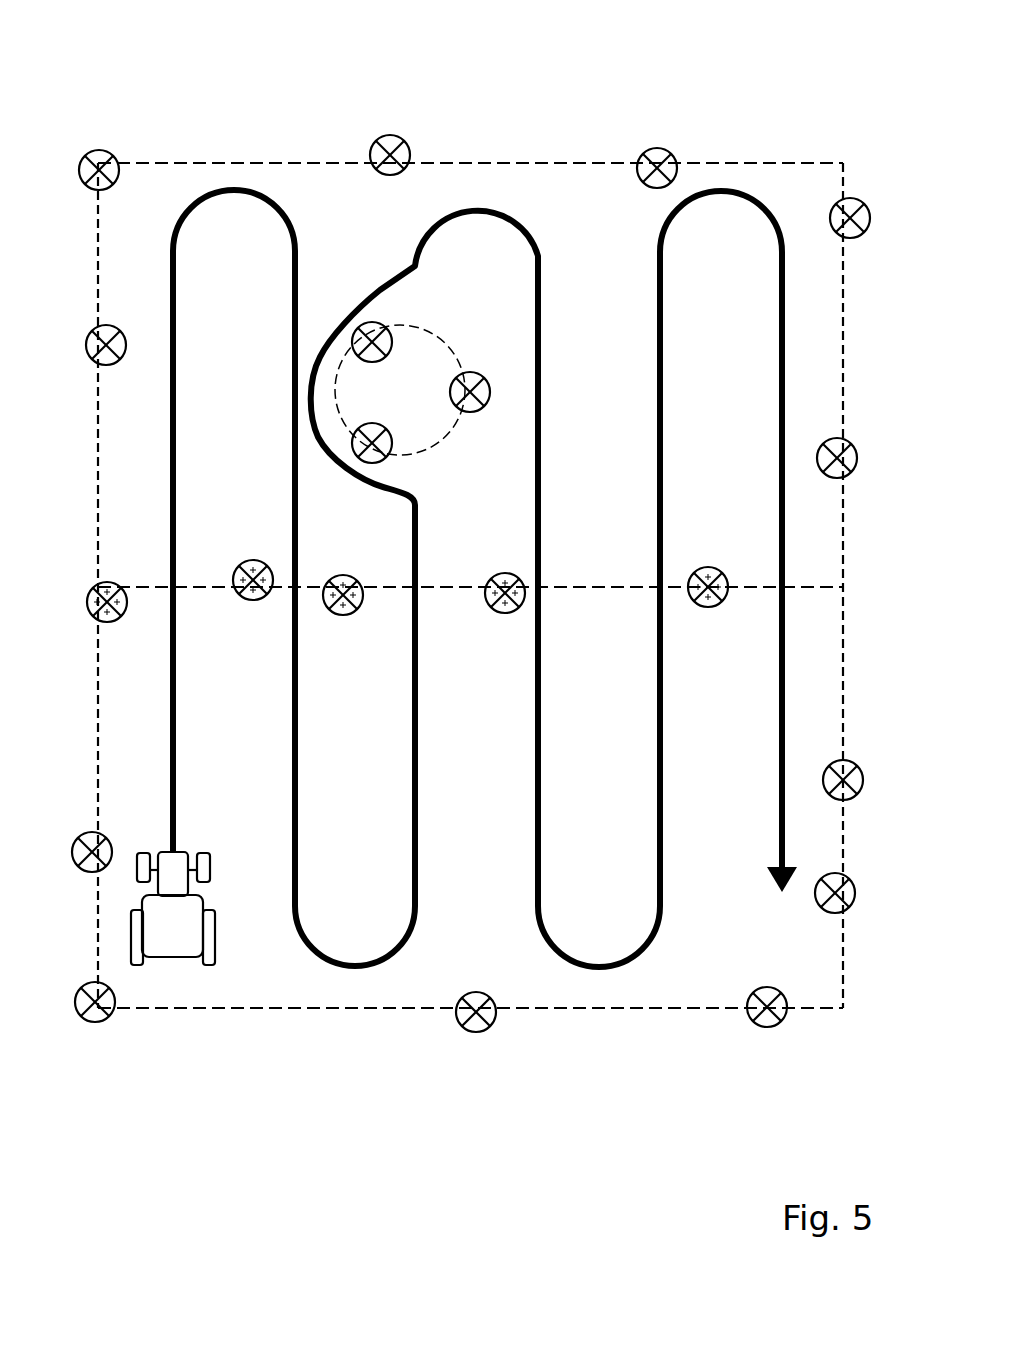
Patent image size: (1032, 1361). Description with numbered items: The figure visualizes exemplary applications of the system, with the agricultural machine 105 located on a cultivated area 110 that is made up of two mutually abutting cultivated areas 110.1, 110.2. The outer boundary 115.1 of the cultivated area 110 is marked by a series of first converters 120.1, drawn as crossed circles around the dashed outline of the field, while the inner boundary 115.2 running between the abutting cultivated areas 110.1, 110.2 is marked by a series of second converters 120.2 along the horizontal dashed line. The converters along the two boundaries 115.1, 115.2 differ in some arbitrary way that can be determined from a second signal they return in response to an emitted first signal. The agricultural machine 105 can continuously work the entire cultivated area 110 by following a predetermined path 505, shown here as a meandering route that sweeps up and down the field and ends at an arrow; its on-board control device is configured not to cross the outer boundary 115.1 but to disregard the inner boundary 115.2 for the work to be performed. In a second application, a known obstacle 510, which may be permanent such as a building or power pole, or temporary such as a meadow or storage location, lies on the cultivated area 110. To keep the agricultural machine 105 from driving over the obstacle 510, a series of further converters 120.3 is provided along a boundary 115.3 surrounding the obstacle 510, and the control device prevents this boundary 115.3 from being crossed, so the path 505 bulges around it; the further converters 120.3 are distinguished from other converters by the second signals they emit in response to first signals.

The agricultural machine 105 is at (173, 960).
The cultivated area 110 is at (471, 596).
The cultivated area 110.1 is at (590, 204).
The cultivated area 110.2 is at (535, 986).
The outer boundary 115.1 is at (295, 1008).
The inner boundary 115.2 is at (816, 508).
The boundary 115.3 is at (343, 362).
The first converters 120.1 is at (657, 148).
The second converters 120.2 is at (708, 607).
The further converters 120.3 is at (470, 386).
The route 505 is at (613, 972).
The obstacle 510 is at (432, 236).